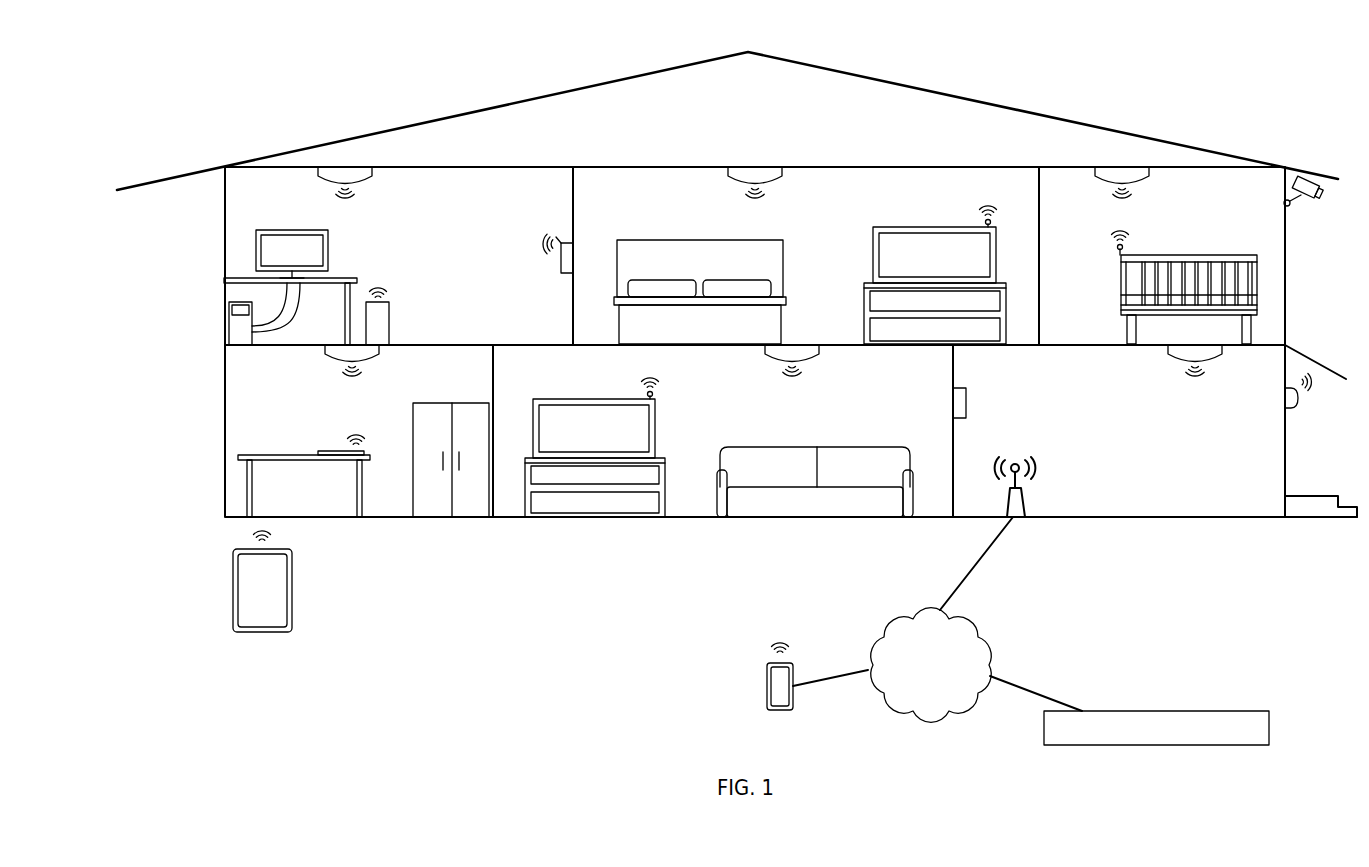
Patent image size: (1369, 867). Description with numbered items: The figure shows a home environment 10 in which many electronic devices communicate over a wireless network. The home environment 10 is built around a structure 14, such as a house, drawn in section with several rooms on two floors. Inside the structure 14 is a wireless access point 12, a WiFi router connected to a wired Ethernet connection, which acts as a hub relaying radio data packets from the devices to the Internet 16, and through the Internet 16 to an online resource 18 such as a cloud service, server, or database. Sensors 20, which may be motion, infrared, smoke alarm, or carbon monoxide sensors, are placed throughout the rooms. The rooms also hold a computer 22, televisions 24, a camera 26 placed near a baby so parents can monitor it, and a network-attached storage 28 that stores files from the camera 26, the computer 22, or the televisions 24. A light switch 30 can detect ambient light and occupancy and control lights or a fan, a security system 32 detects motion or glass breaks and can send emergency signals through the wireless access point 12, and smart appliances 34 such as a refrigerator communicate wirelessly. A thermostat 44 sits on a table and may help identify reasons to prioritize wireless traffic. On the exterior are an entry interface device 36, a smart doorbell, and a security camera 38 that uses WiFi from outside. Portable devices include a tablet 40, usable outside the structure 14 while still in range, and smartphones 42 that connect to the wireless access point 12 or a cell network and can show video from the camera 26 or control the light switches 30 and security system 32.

The home environment 10 is at (1131, 86).
The wireless access point 12 is at (1008, 502).
The structure 14 is at (462, 113).
The Internet 16 is at (996, 656).
The online resource 18 is at (1150, 745).
The sensors 20 is at (365, 181).
The computer 22 is at (286, 230).
The televisions 24 is at (898, 227).
The camera 26 is at (1118, 251).
The network-attached storage 28 is at (390, 309).
The light switch 30 is at (560, 259).
The security system 32 is at (967, 401).
The smart appliances 34 is at (466, 403).
The entry interface device 36 is at (1298, 406).
The security camera 38 is at (1321, 197).
The tablet 40 is at (235, 597).
The smartphones 42 is at (766, 692).
The thermostat 44 is at (331, 450).